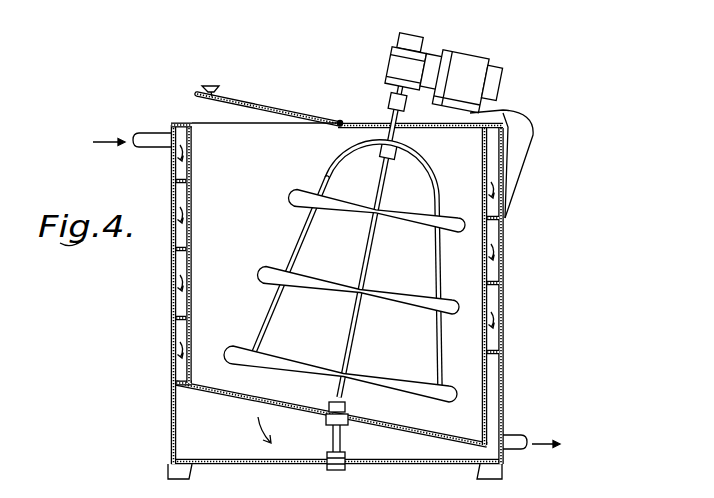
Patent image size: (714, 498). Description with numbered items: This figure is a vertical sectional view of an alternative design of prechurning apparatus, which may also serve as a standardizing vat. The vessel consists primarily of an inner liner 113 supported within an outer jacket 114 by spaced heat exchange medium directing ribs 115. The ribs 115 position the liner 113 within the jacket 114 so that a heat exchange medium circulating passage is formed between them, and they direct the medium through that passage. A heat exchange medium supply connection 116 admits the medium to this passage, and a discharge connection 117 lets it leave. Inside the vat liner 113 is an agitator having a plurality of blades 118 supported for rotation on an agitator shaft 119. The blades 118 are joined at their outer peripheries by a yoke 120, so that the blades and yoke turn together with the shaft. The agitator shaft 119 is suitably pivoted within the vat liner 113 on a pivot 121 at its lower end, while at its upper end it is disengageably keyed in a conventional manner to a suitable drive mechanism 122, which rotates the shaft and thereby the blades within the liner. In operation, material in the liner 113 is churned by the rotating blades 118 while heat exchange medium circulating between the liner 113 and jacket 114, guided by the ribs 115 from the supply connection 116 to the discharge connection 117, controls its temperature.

The inner liner 113 is at (193, 192).
The outer jacket 114 is at (173, 274).
The heat exchange medium directing ribs 115 is at (502, 290).
The heat exchange medium supply connection 116 is at (153, 137).
The discharge connection 117 is at (517, 436).
The blades 118 is at (307, 282).
The agitator shaft 119 is at (372, 249).
The yoke 120 is at (303, 231).
The pivot 121 is at (347, 413).
The drive mechanism 122 is at (457, 54).